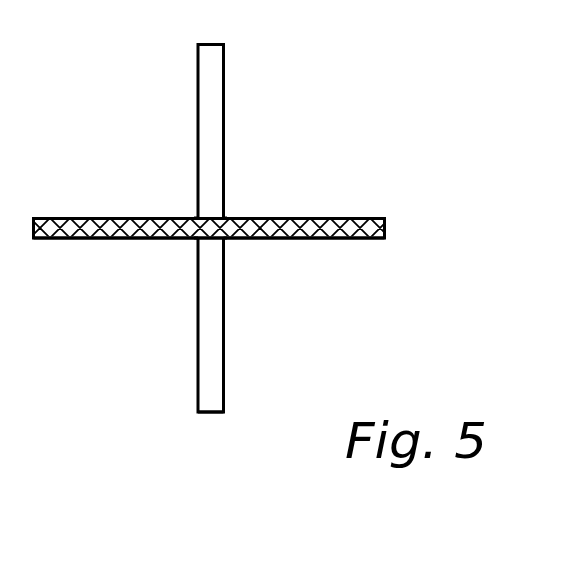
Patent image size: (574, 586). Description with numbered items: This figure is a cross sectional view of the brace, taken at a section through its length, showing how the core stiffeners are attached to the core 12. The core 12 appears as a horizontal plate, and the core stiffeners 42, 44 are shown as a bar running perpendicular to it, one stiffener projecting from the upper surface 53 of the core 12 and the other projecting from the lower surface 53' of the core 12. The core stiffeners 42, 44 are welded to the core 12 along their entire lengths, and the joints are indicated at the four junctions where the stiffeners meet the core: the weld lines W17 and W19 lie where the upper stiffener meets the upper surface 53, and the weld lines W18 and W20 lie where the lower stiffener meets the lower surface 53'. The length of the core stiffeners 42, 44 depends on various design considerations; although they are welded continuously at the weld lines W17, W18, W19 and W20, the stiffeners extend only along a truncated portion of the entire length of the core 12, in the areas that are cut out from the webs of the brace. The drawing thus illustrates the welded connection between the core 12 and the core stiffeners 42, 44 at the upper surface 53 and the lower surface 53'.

The core 12 is at (386, 228).
The core stiffener 42 is at (197, 50).
The core stiffener 44 is at (212, 412).
The upper surface 53 is at (209, 171).
The lower surface 53' is at (209, 285).
The weld line W17 is at (193, 217).
The weld line W18 is at (197, 239).
The weld line W19 is at (226, 218).
The weld line W20 is at (223, 241).